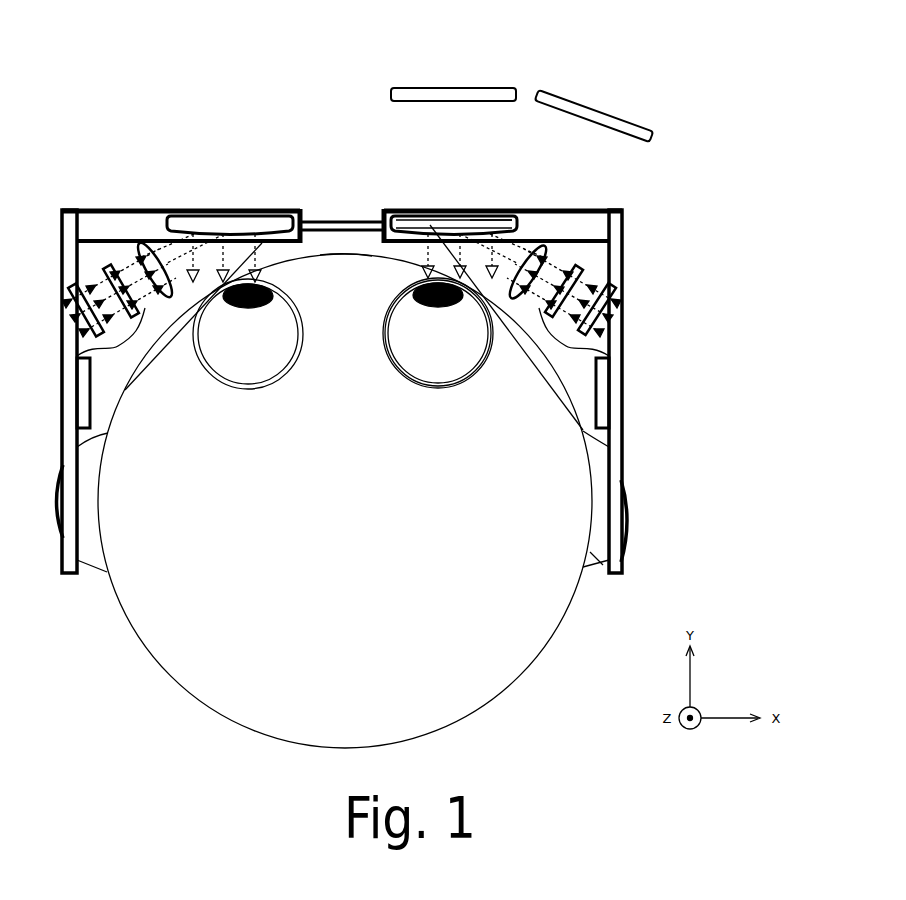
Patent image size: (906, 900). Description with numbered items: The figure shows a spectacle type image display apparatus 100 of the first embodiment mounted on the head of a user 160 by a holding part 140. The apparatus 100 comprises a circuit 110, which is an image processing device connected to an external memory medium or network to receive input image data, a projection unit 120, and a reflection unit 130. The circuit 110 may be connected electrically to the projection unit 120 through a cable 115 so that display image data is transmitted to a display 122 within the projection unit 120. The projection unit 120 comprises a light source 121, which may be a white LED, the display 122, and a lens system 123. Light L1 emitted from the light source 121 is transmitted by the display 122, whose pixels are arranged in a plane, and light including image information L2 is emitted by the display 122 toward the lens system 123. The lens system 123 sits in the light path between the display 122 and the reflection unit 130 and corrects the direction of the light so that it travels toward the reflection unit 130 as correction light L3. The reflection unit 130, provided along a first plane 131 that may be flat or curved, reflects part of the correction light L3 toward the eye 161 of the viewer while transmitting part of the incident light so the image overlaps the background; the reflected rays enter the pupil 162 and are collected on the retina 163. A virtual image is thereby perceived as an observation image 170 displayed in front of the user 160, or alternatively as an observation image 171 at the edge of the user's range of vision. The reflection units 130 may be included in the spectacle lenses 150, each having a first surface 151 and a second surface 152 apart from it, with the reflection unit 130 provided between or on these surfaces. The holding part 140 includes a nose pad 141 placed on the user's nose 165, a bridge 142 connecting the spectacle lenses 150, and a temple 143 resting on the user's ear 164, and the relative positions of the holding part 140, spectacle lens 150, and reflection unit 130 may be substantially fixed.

The image display apparatus 100 is at (725, 257).
The circuit 110 is at (622, 395).
The cable 115 is at (553, 345).
The projection unit 120 is at (378, 264).
The light source 121 is at (615, 270).
The display 122 is at (585, 255).
The lens system 123 is at (540, 250).
The reflection unit 130 is at (445, 222).
The first plane 131 is at (425, 220).
The holding part 140 is at (622, 432).
The nose pad 141 is at (387, 221).
The bridge 142 is at (318, 221).
The temple 143 is at (625, 497).
The spectacle lenses 150 is at (513, 215).
The first surface 151 is at (490, 215).
The second surface 152 is at (372, 262).
The user 160 is at (545, 648).
The eye 161 is at (438, 388).
The pupil 162 is at (415, 304).
The retina 163 is at (399, 358).
The ear 164 is at (620, 568).
The nose 165 is at (320, 222).
The observation image 170 is at (450, 88).
The observation image 171 is at (590, 110).
The light L1 is at (618, 255).
The light including image information L2 is at (560, 250).
The correction light L3 is at (527, 245).